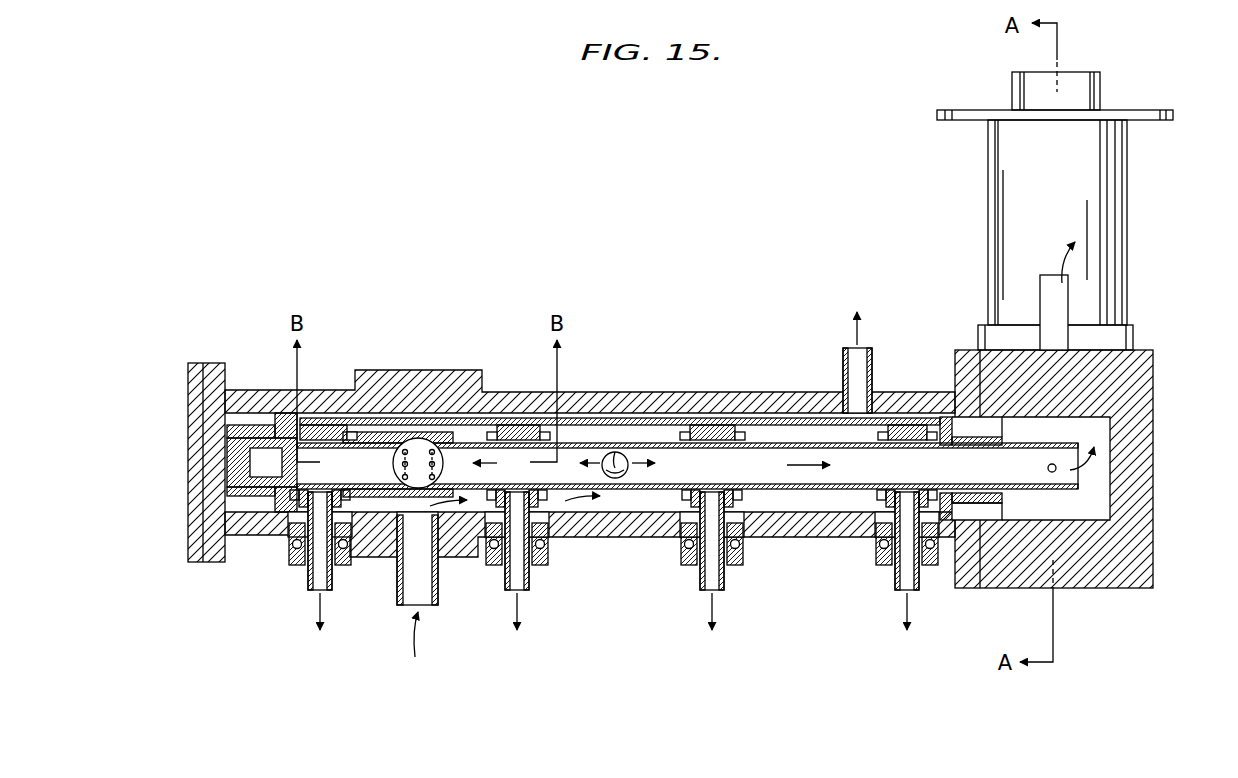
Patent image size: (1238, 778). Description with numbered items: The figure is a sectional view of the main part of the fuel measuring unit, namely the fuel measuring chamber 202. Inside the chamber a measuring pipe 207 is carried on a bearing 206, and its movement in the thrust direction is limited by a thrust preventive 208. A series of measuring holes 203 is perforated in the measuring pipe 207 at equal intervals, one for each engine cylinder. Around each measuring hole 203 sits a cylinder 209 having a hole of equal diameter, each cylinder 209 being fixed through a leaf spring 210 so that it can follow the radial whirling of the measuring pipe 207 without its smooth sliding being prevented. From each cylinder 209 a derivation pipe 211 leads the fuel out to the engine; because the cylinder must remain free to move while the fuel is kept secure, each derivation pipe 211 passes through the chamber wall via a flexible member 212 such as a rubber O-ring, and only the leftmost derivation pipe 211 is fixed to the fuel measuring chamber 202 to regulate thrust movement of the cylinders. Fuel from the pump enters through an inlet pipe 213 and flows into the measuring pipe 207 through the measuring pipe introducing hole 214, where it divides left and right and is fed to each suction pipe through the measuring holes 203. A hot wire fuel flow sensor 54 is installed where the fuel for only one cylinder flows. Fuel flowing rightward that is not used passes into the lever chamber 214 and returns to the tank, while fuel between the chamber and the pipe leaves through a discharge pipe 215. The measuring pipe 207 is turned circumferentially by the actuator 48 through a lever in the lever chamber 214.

The actuator 48 is at (1122, 205).
The fuel flow sensor 54 is at (415, 450).
The fuel measuring chamber 202 is at (594, 392).
The measuring hole 203 is at (472, 443).
The bearing 206 is at (250, 515).
The measuring pipe 207 is at (815, 490).
The thrust preventive 208 is at (282, 520).
The cylinder 209 is at (325, 425).
The leaf spring 210 is at (643, 420).
The derivation pipe 211 is at (333, 585).
The flexible member 212 is at (541, 565).
The inlet pipe 213 is at (400, 600).
The measuring pipe introducing hole / lever chamber 214 is at (1153, 360).
The discharge pipe 215 is at (866, 348).